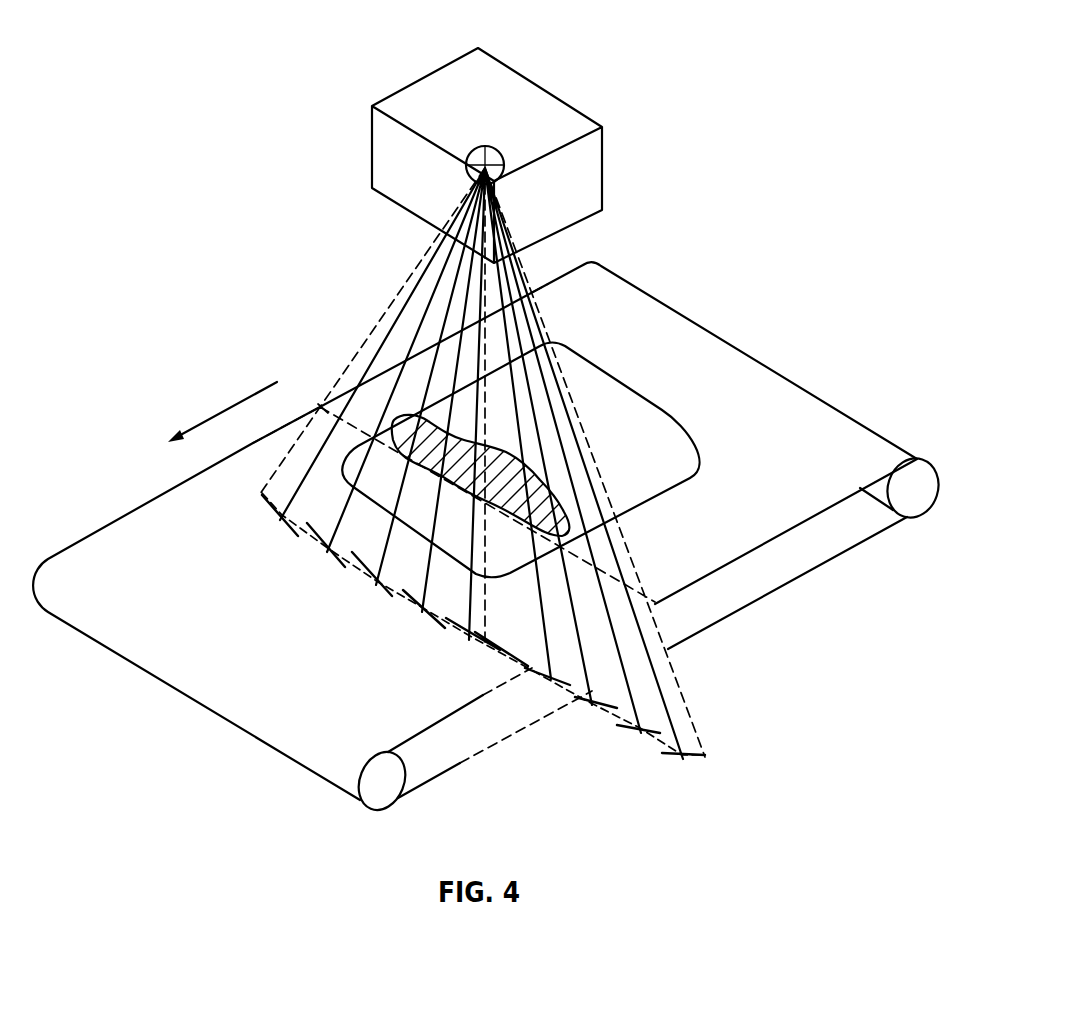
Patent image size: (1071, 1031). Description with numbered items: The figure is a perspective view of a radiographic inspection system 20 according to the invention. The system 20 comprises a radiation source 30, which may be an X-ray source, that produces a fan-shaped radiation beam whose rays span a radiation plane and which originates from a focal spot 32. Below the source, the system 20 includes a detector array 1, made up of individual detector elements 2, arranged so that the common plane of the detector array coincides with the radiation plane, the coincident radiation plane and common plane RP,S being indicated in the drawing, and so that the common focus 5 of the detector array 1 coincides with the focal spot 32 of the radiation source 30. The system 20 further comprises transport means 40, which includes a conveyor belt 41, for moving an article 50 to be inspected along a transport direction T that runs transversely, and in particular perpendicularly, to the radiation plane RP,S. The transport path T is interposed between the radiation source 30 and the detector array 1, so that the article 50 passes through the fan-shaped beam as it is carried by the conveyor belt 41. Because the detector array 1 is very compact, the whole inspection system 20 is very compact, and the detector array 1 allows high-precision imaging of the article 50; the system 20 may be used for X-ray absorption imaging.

The detector array 1 is at (480, 676).
The detector element 2 is at (279, 520).
The common focus 5 is at (498, 140).
The focal spot 32 is at (489, 147).
The radiographic inspection system 20 is at (373, 142).
The radiation source 30 is at (537, 84).
The transport means 40 is at (490, 533).
The conveyor belt 41 is at (690, 318).
The article 50 is at (653, 404).
The transport direction T is at (225, 408).
The radiation plane and common plane RP,S is at (549, 326).